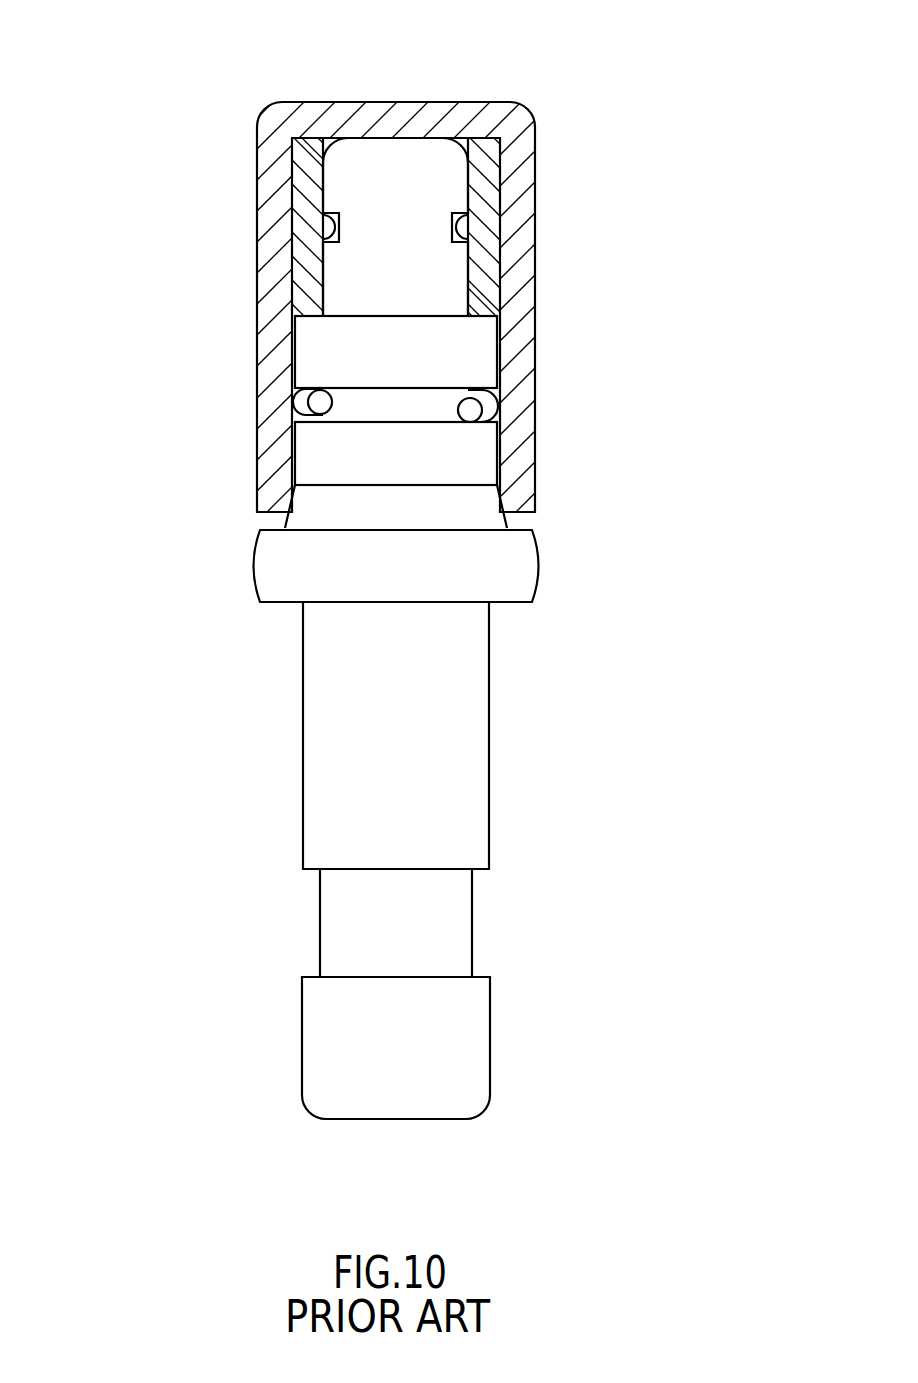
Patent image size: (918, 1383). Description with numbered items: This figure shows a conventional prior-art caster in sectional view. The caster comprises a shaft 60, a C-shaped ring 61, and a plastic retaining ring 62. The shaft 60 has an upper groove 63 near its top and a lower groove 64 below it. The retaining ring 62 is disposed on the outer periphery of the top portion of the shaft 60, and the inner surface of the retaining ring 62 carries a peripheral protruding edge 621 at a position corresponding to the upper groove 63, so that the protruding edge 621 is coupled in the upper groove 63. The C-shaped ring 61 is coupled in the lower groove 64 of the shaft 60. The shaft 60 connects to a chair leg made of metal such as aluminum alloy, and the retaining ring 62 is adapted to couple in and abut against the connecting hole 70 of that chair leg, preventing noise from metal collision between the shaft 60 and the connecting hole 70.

The shaft 60 is at (500, 705).
The C-shaped ring 61 is at (320, 400).
The plastic retaining ring 62 is at (307, 228).
The peripheral protruding edge 621 is at (463, 222).
The upper groove 63 is at (378, 212).
The lower groove 64 is at (415, 423).
The connecting hole 70 is at (478, 95).